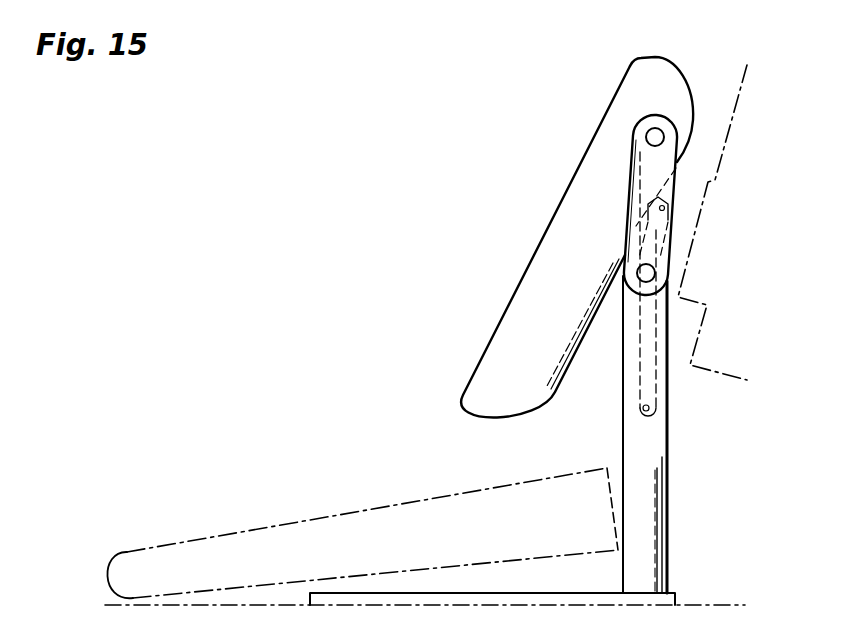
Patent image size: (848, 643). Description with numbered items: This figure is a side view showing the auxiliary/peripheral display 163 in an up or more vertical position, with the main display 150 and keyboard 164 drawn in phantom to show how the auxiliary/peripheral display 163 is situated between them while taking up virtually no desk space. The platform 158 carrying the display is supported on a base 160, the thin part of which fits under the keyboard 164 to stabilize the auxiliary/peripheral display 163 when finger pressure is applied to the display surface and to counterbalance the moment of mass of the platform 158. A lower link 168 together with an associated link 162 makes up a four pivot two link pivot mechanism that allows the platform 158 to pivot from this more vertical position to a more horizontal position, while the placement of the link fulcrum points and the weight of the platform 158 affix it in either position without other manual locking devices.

The main display 150 is at (738, 88).
The platform 158 is at (525, 270).
The base 160 is at (668, 478).
The link 162 is at (630, 165).
The auxiliary/peripheral display 163 is at (618, 76).
The keyboard 164 is at (133, 552).
The lower link 168 is at (640, 358).